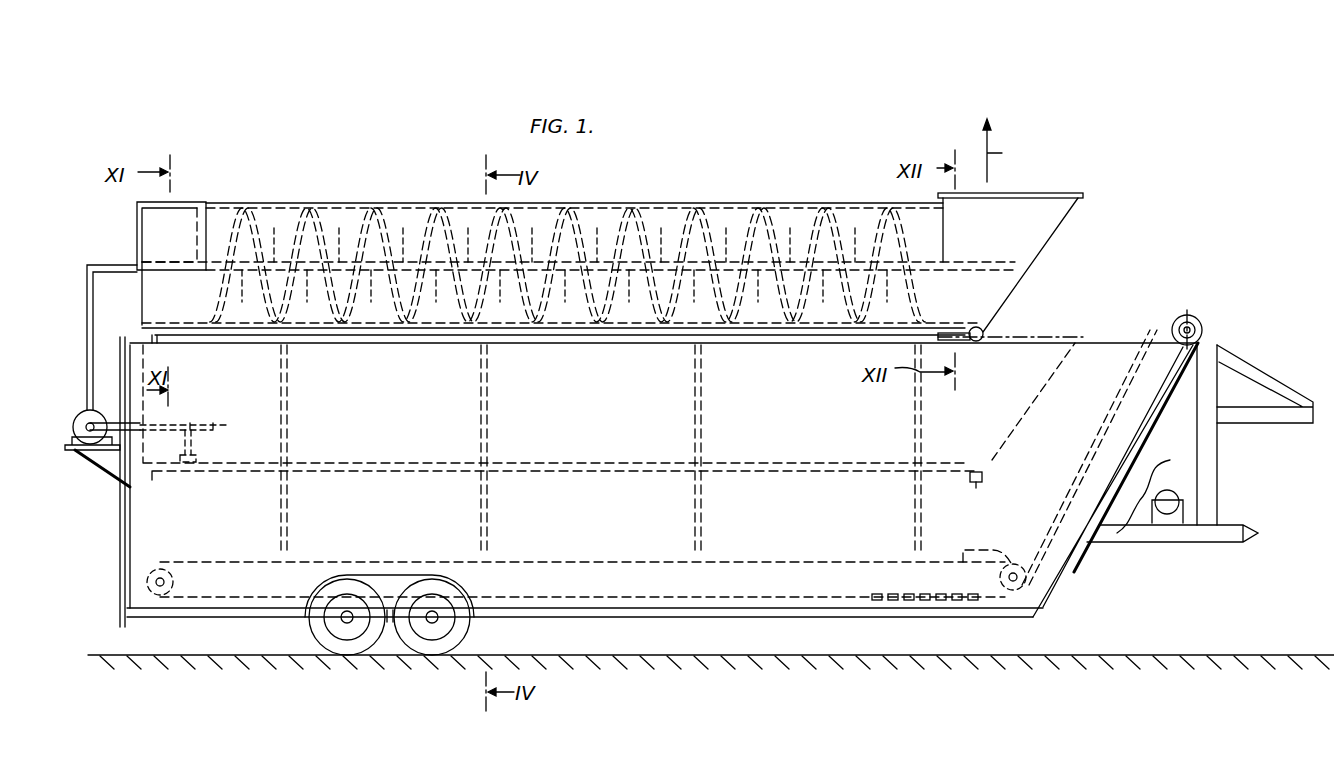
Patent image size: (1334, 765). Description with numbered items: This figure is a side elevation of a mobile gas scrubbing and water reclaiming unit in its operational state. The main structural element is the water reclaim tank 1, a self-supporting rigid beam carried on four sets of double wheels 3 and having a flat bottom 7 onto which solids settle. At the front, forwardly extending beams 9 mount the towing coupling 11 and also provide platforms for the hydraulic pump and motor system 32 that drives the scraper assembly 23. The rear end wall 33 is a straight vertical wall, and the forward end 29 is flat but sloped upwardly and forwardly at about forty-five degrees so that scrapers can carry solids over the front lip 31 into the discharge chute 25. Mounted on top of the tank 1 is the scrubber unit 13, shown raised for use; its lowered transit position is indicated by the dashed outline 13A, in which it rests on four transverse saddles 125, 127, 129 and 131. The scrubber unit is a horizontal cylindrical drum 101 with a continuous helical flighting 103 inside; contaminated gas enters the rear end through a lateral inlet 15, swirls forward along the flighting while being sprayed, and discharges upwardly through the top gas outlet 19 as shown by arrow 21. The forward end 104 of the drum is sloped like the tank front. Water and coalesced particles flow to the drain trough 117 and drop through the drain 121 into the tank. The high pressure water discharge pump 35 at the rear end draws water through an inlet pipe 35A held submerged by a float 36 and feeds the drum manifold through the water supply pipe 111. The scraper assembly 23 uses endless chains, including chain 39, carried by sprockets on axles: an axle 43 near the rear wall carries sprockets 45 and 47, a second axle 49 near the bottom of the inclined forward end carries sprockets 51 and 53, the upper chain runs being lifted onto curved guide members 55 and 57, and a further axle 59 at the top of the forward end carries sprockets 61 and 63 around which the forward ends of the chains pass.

The water reclaim tank 1 is at (593, 519).
The double wheels 3 is at (322, 632).
The flat bottom 7 is at (600, 606).
The beams 9 is at (1203, 470).
The towing coupling 11 is at (1256, 530).
The scrubber unit 13 is at (578, 247).
The dashed outline of scrubber unit transit position 13A is at (803, 462).
The lateral inlet 15 is at (165, 230).
The top gas outlet 19 is at (1034, 194).
The arrow 21 is at (1006, 150).
The scraper assembly 23 is at (780, 562).
The discharge chute 25 is at (1266, 375).
The forward end 29 is at (1132, 456).
The front end lip 31 is at (1208, 346).
The hydraulic pump and motor system 32 is at (1172, 502).
The rear end wall 33 is at (128, 518).
The high pressure water discharge pump 35 is at (95, 445).
The water inlet pipe 35A is at (174, 418).
The float 36 is at (214, 431).
The endless chain 39 is at (893, 592).
The axle 43 is at (152, 565).
The sprocket 45 is at (191, 558).
The sprocket 47 is at (162, 568).
The second axle 49 is at (1075, 589).
The sprocket 51 is at (1079, 575).
The sprocket 53 is at (1027, 577).
The curved guide member 55 is at (974, 541).
The curved guide member 57 is at (992, 548).
The further axle 59 is at (1176, 318).
The sprocket 61 is at (1208, 306).
The sprocket 63 is at (1172, 324).
The drum 101 is at (776, 208).
The helical flighting 103 is at (630, 210).
The forward end of drum 104 is at (1030, 273).
The water supply pipe 111 is at (93, 300).
The drain trough 117 is at (612, 327).
The drain 121 is at (975, 345).
The transverse saddle 125 is at (288, 405).
The transverse saddle 127 is at (488, 400).
The transverse saddle 129 is at (702, 390).
The transverse saddle 131 is at (922, 422).